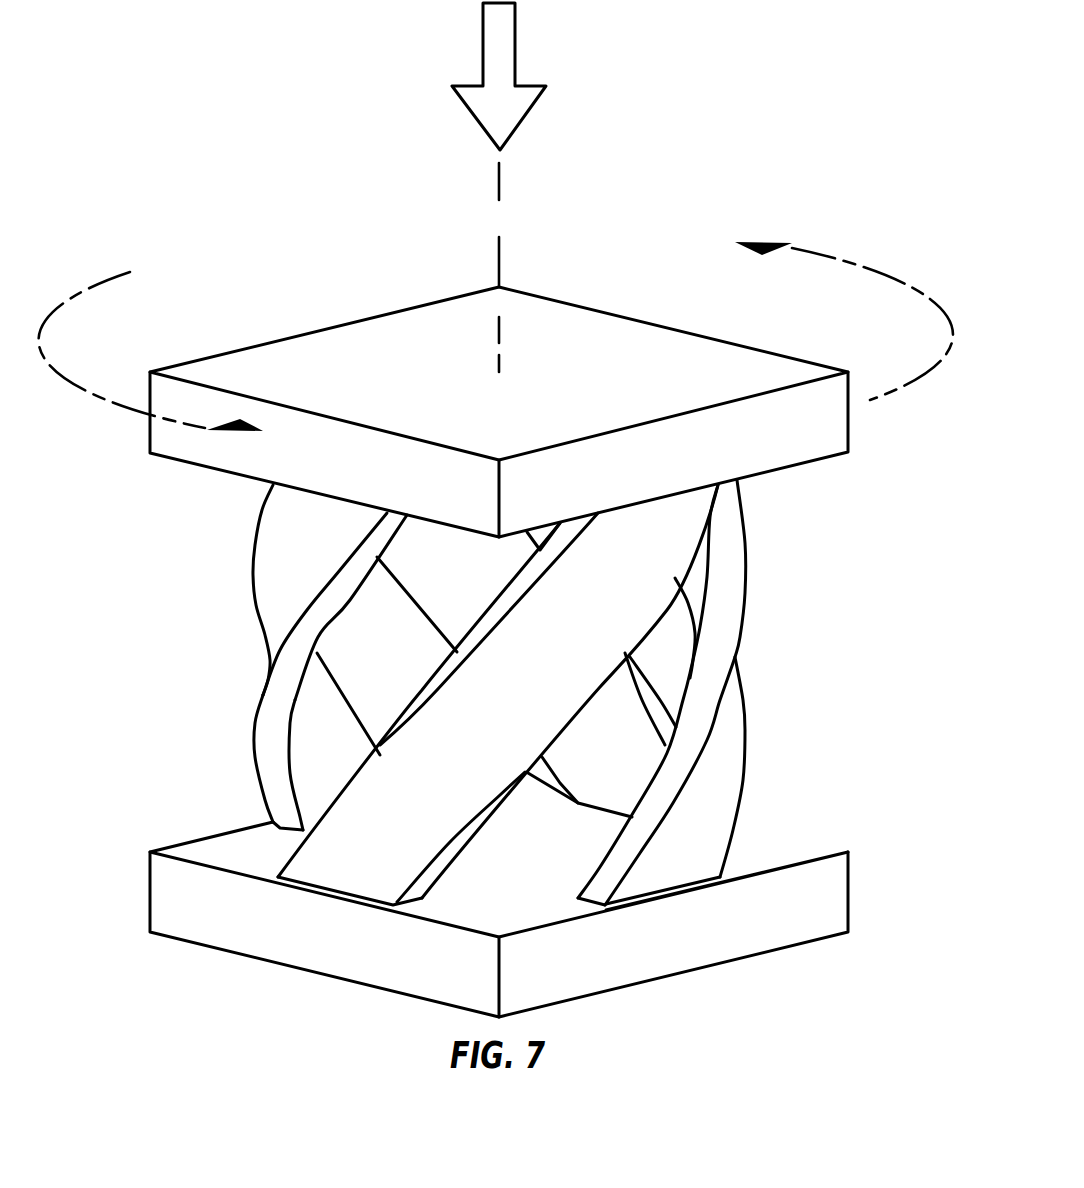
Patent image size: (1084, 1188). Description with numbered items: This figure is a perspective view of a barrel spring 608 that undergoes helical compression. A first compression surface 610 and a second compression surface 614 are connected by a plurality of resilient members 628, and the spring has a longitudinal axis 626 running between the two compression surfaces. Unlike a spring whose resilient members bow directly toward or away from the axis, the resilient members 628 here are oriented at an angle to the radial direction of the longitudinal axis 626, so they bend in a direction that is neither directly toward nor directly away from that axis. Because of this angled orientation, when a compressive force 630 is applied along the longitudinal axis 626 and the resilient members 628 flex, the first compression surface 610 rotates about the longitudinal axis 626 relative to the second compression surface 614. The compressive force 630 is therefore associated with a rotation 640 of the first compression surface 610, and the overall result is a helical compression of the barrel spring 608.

The barrel spring 608 is at (871, 60).
The first compression surface 610 is at (762, 367).
The second compression surface 614 is at (753, 955).
The longitudinal axis 626 is at (499, 250).
The resilient members 628 is at (735, 758).
The compressive force 630 is at (516, 47).
The rotation 640 is at (872, 272).